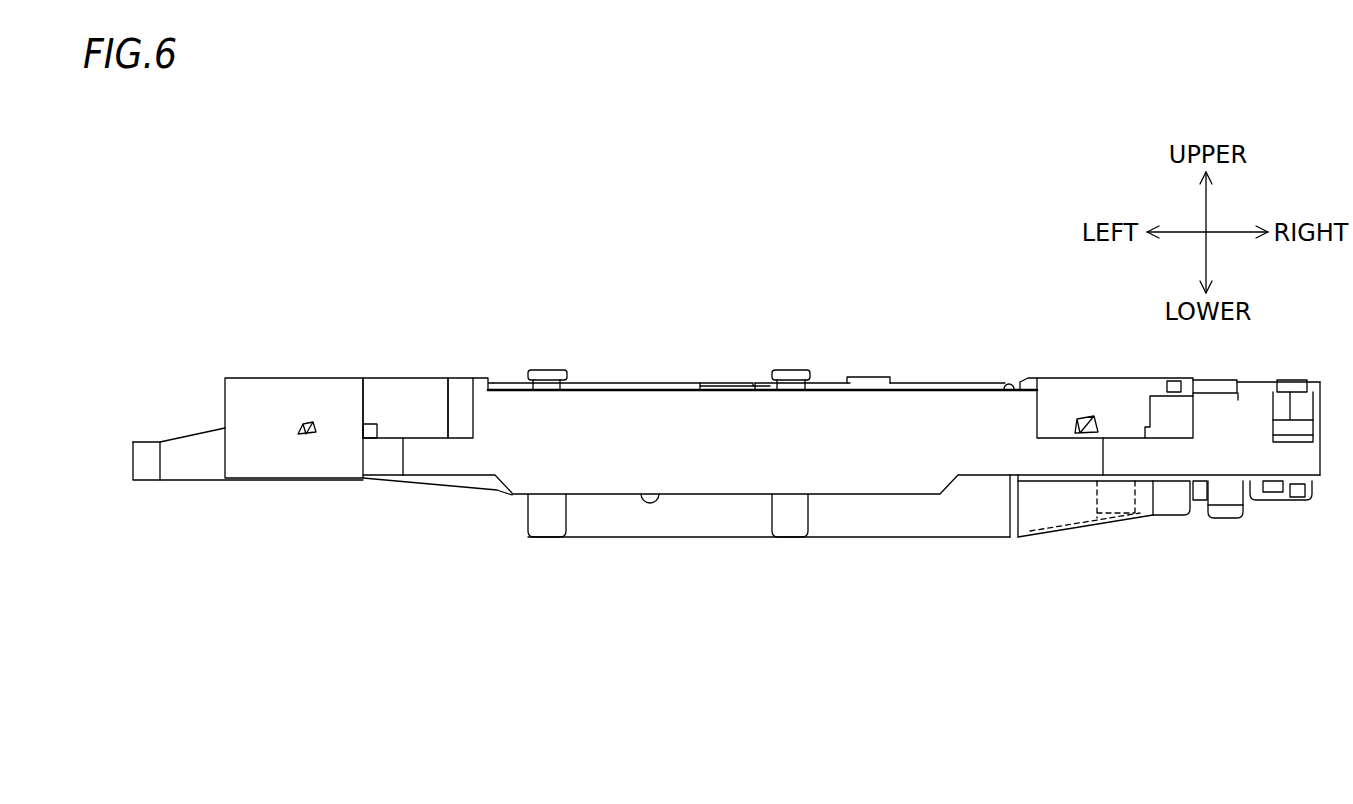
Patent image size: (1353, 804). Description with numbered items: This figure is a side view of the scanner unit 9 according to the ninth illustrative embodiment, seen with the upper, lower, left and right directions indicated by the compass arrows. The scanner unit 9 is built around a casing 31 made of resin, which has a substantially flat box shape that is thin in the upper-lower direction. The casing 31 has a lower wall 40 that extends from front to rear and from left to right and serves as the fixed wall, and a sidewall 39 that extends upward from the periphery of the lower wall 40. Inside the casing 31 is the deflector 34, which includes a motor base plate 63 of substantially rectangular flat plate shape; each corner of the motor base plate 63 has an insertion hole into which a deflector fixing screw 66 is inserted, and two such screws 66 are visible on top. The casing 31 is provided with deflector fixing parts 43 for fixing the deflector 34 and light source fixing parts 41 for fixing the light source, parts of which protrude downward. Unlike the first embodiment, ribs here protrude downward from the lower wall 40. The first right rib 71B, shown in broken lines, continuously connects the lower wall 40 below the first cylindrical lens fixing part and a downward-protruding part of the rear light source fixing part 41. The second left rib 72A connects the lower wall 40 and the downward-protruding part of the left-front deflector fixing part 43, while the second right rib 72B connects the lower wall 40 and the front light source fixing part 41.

The scanner unit 9 is at (836, 663).
The casing 31 is at (437, 470).
The deflector 34 is at (742, 383).
The sidewall 39 is at (490, 457).
The lower wall 40 is at (658, 497).
The light source fixing part 41 is at (1173, 508).
The deflector fixing part 43 is at (546, 522).
The motor base plate 63 is at (722, 385).
The deflector fixing screw 66 is at (548, 372).
The first right rib 71B is at (1060, 527).
The second left rib 72A is at (905, 532).
The second right rib 72B is at (1085, 527).